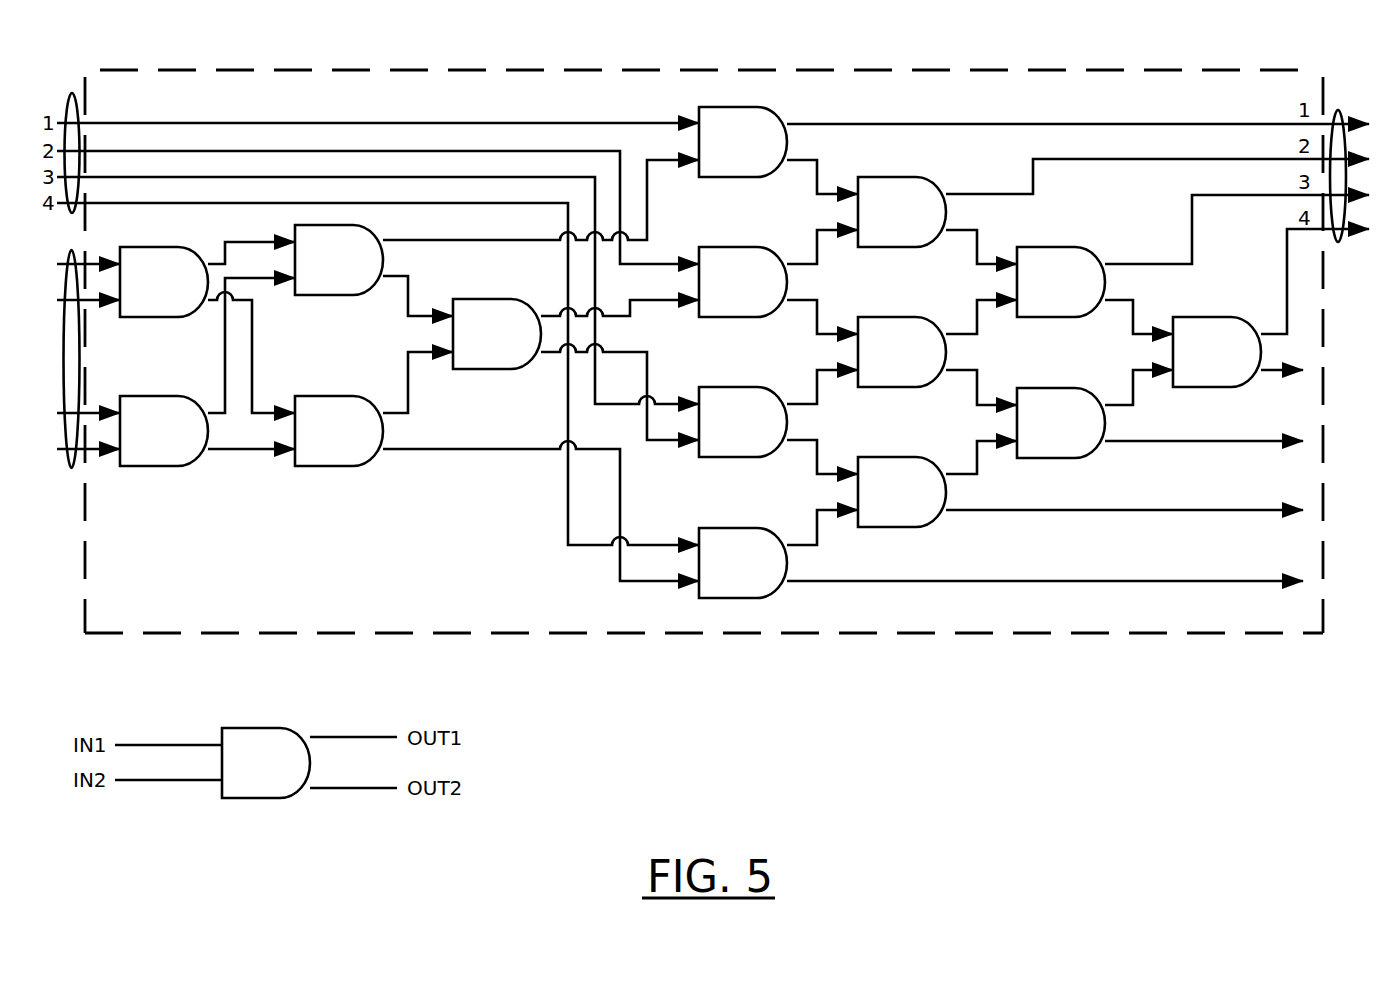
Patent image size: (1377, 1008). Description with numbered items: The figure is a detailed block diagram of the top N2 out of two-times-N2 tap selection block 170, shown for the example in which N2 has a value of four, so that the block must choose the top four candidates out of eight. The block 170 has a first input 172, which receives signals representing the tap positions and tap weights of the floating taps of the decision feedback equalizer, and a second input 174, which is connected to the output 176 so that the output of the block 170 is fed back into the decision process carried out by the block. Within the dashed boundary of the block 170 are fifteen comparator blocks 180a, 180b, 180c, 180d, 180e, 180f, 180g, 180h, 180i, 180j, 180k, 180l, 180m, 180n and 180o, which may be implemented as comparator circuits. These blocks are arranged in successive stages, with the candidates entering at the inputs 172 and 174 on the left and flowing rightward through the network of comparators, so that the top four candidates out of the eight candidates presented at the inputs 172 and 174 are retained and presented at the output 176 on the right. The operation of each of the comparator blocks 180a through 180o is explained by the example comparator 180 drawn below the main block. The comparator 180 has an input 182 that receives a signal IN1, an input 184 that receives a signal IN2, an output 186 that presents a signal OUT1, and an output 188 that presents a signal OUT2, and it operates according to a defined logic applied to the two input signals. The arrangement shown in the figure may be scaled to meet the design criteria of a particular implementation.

The top N2 out of 2*N2 tap selection block 170 is at (253, 70).
The first input 172 is at (72, 468).
The second input 174 is at (72, 96).
The output 176 is at (1338, 242).
The comparator 180 is at (277, 774).
The comparator block 180a is at (141, 247).
The comparator block 180b is at (141, 396).
The comparator block 180c is at (316, 296).
The comparator block 180d is at (316, 396).
The comparator block 180e is at (474, 299).
The comparator block 180f is at (720, 107).
The comparator block 180g is at (720, 247).
The comparator block 180h is at (720, 387).
The comparator block 180i is at (720, 528).
The comparator block 180j is at (879, 177).
The comparator block 180k is at (879, 317).
The comparator block 180l is at (879, 457).
The comparator block 180m is at (1038, 247).
The comparator block 180n is at (1038, 388).
The comparator block 180o is at (1194, 317).
The input 182 is at (222, 740).
The input 184 is at (222, 787).
The output 186 is at (297, 735).
The output 188 is at (297, 790).